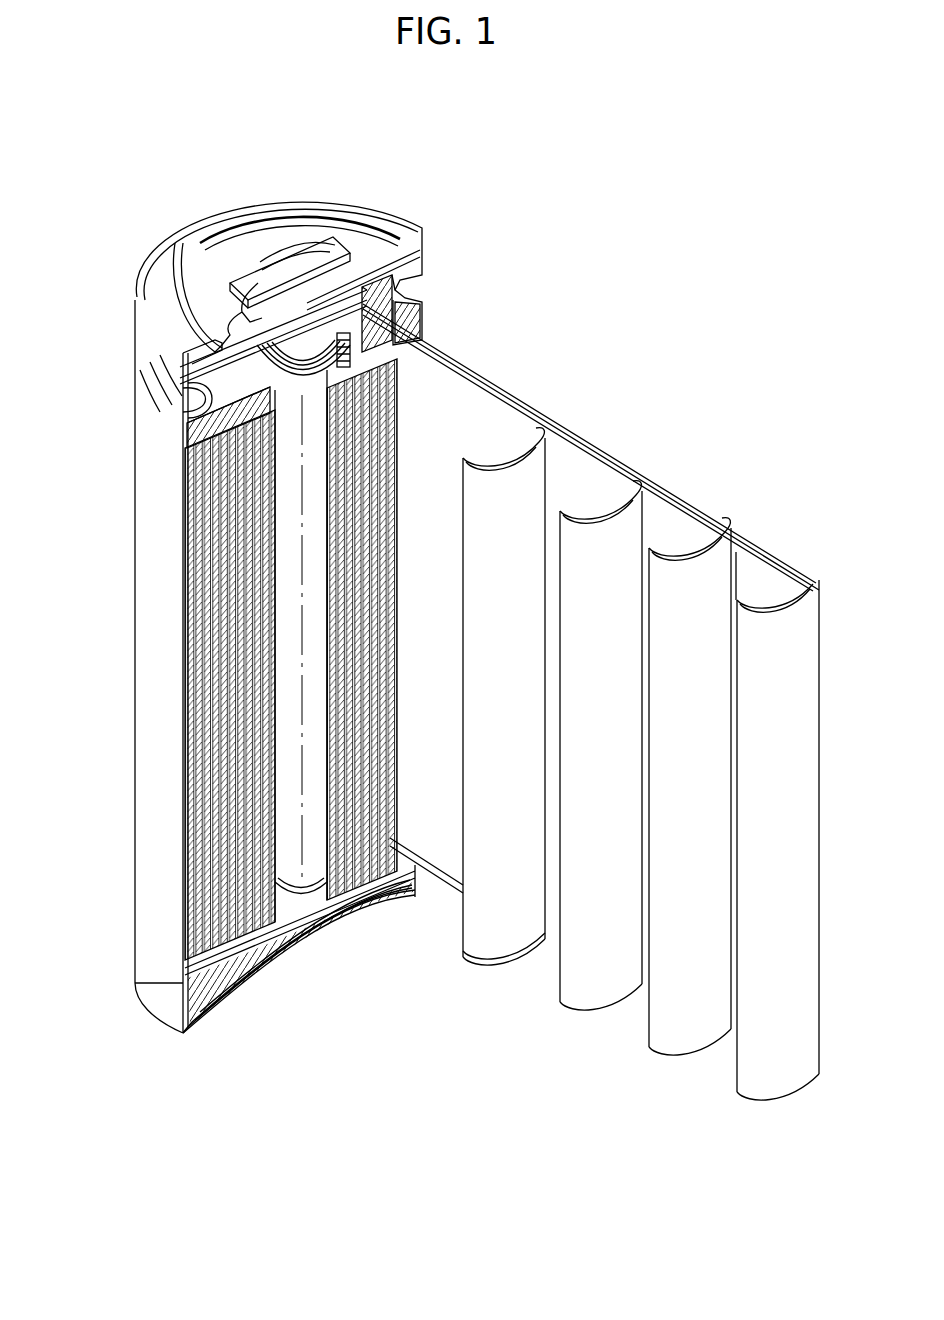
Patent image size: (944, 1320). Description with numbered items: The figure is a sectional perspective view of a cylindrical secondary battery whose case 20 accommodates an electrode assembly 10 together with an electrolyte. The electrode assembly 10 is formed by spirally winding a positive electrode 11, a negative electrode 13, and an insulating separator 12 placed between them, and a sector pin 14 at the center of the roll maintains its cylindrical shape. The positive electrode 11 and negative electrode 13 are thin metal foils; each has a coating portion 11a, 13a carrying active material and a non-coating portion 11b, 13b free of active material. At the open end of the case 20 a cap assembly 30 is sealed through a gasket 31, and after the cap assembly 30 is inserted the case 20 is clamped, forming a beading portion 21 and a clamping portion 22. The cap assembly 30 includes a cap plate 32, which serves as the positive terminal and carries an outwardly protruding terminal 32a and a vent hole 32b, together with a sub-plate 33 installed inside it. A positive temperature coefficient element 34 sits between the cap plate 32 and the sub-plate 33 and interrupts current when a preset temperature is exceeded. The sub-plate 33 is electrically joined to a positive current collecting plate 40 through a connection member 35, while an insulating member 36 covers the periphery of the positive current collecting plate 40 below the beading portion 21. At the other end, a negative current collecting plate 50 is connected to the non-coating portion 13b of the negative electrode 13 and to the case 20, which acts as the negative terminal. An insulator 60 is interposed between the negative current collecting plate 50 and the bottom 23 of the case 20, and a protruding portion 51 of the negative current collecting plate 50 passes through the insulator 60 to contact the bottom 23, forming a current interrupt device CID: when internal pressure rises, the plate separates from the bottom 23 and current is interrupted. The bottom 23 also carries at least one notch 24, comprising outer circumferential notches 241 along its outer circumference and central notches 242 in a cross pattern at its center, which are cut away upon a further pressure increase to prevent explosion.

The electrode assembly 10 is at (178, 768).
The positive electrode 11 is at (591, 702).
The coating portion 11a is at (720, 587).
The non-coating portion 11b is at (797, 488).
The separator 12 is at (590, 993).
The negative electrode 13 is at (467, 743).
The coating portion 13a is at (456, 933).
The non-coating portion 13b is at (500, 966).
The sector pin 14 is at (292, 668).
The case 20 is at (128, 598).
The beading portion 21 is at (200, 404).
The clamping portion 22 is at (157, 327).
The bottom 23 is at (380, 897).
The notch 24 is at (297, 1009).
The outer circumferential notch 241 is at (195, 1036).
The central notch 242 is at (305, 937).
The cap assembly 30 is at (266, 230).
The gasket 31 is at (410, 276).
The cap plate 32 is at (358, 240).
The terminal 32a is at (297, 252).
The vent hole 32b is at (235, 297).
The sub-plate 33 is at (402, 328).
The positive temperature coefficient element 34 is at (363, 265).
The connection member 35 is at (400, 300).
The insulating member 36 is at (190, 438).
The positive current collecting plate 40 is at (193, 456).
The negative current collecting plate 50 is at (180, 985).
The protruding portion 51 is at (323, 907).
The insulator 60 is at (180, 1027).
The current interrupt device CID is at (318, 933).